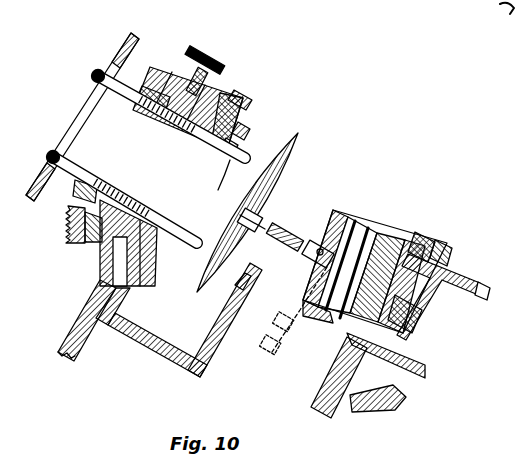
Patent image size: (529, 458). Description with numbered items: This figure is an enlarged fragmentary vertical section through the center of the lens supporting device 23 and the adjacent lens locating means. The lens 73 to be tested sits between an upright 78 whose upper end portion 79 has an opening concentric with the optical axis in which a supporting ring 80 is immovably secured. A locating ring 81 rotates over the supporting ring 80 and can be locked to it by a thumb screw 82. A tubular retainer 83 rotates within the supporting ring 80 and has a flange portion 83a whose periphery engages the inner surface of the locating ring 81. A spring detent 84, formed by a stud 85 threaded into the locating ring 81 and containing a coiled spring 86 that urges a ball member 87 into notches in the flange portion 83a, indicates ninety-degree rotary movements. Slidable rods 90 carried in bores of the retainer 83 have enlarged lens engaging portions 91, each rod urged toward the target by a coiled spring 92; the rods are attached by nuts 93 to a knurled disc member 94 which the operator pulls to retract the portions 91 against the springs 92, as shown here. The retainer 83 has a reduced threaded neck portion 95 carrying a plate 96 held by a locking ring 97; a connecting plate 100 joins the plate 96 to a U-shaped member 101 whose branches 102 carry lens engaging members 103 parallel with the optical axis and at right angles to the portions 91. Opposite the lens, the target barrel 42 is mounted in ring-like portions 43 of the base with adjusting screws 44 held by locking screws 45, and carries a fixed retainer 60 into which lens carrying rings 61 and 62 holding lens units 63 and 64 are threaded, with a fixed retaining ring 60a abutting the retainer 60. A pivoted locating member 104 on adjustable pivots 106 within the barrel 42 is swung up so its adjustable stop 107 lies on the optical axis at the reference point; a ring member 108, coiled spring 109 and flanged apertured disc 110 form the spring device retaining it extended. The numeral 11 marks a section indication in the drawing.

The section reference arrow 11 is at (210, 28).
The lens supporting device 23 is at (252, 92).
The target barrel 42 is at (486, 292).
The ring-like upwardly extending portions 43 is at (450, 248).
The adjusting screws 44 is at (447, 240).
The locking screws 45 is at (424, 230).
The fixed retainer 60 is at (400, 247).
The fixed retaining ring 60a is at (330, 360).
The lens carrying ring 61 is at (407, 247).
The lens carrying ring 62 is at (387, 247).
The lens unit 63 is at (417, 325).
The lens unit 64 is at (417, 303).
The lens 73 is at (300, 160).
The upright 78 is at (88, 347).
The upper end portion 79 is at (246, 96).
The supporting ring 80 is at (87, 233).
The locating ring 81 is at (158, 64).
The thumb screw 82 is at (207, 46).
The tubular retainer 83 is at (152, 84).
The flange portion 83a is at (158, 60).
The spring detent 84 is at (54, 228).
The stud 85 is at (63, 235).
The coiled spring 86 is at (76, 215).
The ball member 87 is at (80, 198).
The slidable rod 90 is at (117, 98).
The lens engaging portion 91 is at (190, 230).
The coiled spring 92 is at (131, 186).
The nuts 93 is at (93, 81).
The disc member 94 is at (128, 38).
The reduced threaded neck portion 95 is at (240, 142).
The plate 96 is at (141, 292).
The locking ring 97 is at (248, 128).
The connecting plate 100 is at (150, 353).
The U-shaped member 101 is at (211, 354).
The branches 102 is at (245, 277).
The lens engaging members 103 is at (265, 214).
The locating member 104 is at (312, 243).
The adjustable pivots 106 is at (310, 265).
The adjustable stop 107 is at (248, 232).
The ring member 108 is at (330, 330).
The coiled spring 109 is at (317, 310).
The flanged apertured disc 110 is at (343, 233).